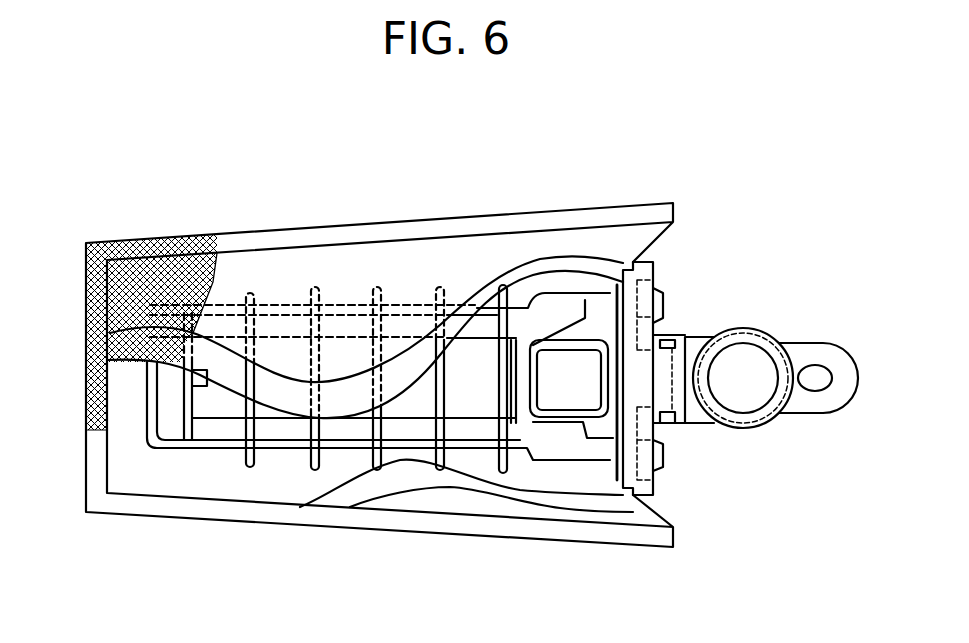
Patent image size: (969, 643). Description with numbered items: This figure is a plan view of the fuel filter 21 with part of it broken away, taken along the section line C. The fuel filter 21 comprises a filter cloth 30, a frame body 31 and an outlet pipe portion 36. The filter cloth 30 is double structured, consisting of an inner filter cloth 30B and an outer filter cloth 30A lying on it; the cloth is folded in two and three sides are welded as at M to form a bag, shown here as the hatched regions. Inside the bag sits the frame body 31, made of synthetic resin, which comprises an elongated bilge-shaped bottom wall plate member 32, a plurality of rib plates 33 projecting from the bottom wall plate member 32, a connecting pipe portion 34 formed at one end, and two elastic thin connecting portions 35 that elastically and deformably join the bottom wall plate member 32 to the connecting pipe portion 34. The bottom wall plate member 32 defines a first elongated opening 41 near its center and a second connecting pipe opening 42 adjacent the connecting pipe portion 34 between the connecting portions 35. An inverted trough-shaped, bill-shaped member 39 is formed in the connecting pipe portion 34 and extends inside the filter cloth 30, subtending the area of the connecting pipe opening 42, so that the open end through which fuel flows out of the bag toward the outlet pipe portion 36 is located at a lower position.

The fuel filter 21 is at (405, 220).
The welded portion M is at (110, 243).
The filter cloth 30 is at (227, 158).
The outer filter cloth 30A is at (240, 257).
The inner filter cloth 30B is at (190, 335).
The first elongated opening 41 is at (330, 347).
The frame body 31 is at (162, 450).
The bottom wall plate member 32 is at (223, 432).
The rib plates 33 is at (303, 470).
The inverted trough-shaped member 39 is at (552, 363).
The elastic thin connecting portions 35 is at (612, 307).
The connecting pipe opening 42 is at (603, 423).
The outlet pipe portion 36 is at (697, 343).
The connecting pipe portion 34 is at (610, 447).
The section line C is at (83, 380).